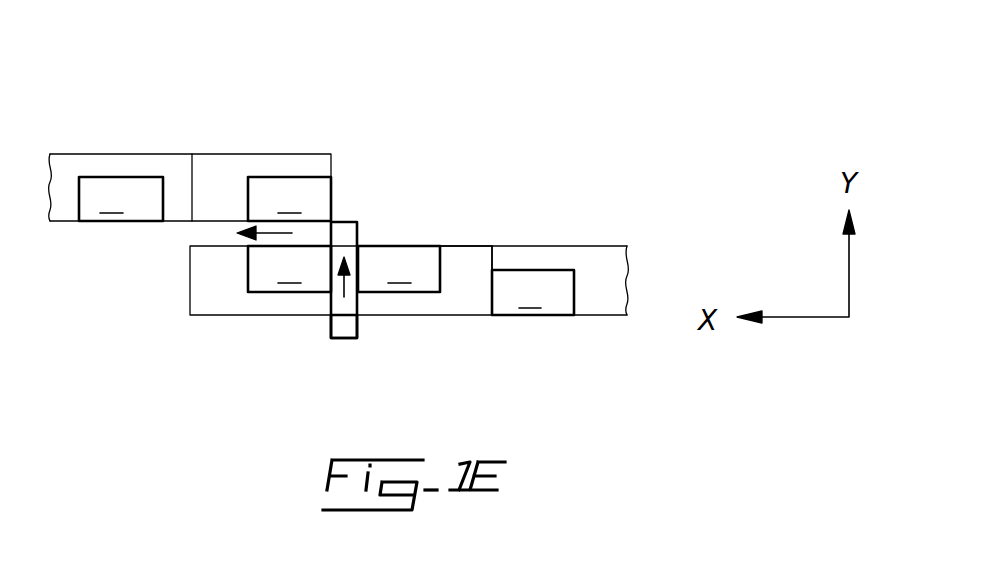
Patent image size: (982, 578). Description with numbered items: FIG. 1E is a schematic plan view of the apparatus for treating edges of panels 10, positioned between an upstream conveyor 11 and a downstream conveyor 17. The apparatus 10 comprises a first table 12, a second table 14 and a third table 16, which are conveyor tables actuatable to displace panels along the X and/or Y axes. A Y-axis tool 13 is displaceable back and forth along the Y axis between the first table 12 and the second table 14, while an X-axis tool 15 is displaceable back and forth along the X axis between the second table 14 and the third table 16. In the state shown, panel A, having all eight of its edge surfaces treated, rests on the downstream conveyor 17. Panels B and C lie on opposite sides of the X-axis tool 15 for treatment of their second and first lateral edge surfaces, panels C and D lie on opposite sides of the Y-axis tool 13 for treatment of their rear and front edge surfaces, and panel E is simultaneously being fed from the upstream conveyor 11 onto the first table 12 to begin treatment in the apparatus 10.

The apparatus for treating edges of panels 10 is at (488, 106).
The upstream conveyor 11 is at (543, 246).
The first table 12 is at (470, 246).
The Y-axis tool 13 is at (357, 328).
The second table 14 is at (230, 315).
The X-axis tool 15 is at (343, 222).
The third table 16 is at (207, 154).
The downstream conveyor 17 is at (105, 222).